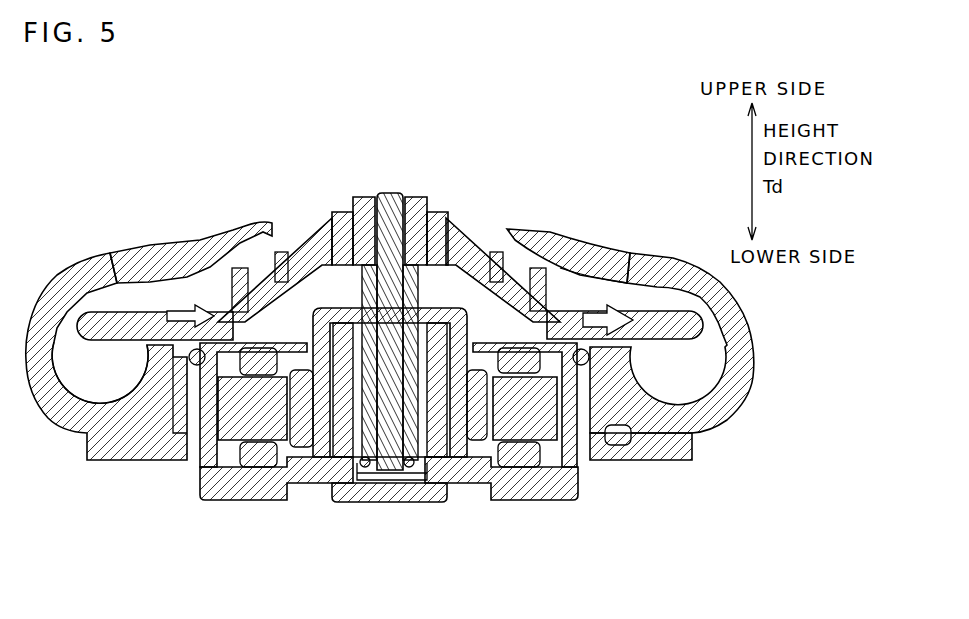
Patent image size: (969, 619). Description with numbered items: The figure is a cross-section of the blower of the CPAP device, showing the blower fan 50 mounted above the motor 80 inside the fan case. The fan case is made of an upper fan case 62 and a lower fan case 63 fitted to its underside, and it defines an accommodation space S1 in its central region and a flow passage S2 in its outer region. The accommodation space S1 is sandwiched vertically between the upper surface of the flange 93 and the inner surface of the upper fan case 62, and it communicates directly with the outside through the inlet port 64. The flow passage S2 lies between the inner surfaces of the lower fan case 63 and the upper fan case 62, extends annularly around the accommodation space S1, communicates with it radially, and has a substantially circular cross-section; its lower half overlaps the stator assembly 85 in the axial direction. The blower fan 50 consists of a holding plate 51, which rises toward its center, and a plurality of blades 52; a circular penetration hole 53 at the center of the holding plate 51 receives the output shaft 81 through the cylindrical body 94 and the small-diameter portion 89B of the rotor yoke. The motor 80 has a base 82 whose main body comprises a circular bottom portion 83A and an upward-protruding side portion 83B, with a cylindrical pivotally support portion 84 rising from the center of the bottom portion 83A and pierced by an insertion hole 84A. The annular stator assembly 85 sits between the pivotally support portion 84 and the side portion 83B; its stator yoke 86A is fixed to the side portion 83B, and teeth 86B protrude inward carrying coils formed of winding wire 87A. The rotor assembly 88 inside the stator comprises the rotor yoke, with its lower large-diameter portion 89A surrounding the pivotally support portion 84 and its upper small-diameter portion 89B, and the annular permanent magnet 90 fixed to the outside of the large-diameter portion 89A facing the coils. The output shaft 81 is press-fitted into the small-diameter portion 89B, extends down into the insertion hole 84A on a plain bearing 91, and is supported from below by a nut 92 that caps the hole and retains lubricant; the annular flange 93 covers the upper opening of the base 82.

The blower fan 50 is at (329, 186).
The holding plate 51 is at (127, 307).
The blades 52 is at (253, 262).
The penetration hole 53 is at (410, 212).
The upper fan case 62 is at (673, 253).
The lower fan case 63 is at (713, 425).
The inlet port 64 is at (518, 271).
The motor 80 is at (594, 423).
The output shaft 81 is at (389, 193).
The base 82 is at (586, 517).
The bottom portion 83A is at (527, 503).
The side portion 83B is at (580, 473).
The pivotally support portion 84 is at (477, 440).
The insertion hole 84A is at (360, 468).
The stator assembly 85 is at (206, 393).
The stator yoke 86A is at (197, 432).
The teeth 86B is at (253, 460).
The winding wire 87A is at (213, 498).
The rotor assembly 88 is at (491, 323).
The large-diameter portion 89A is at (298, 262).
The small-diameter portion 89B is at (433, 205).
The permanent magnet 90 is at (495, 405).
The plain bearing 91 is at (435, 343).
The nut 92 is at (388, 505).
The flange 93 is at (217, 323).
The cylindrical body 94 is at (355, 212).
The accommodation space S1 is at (520, 270).
The flow passage S2 is at (93, 363).